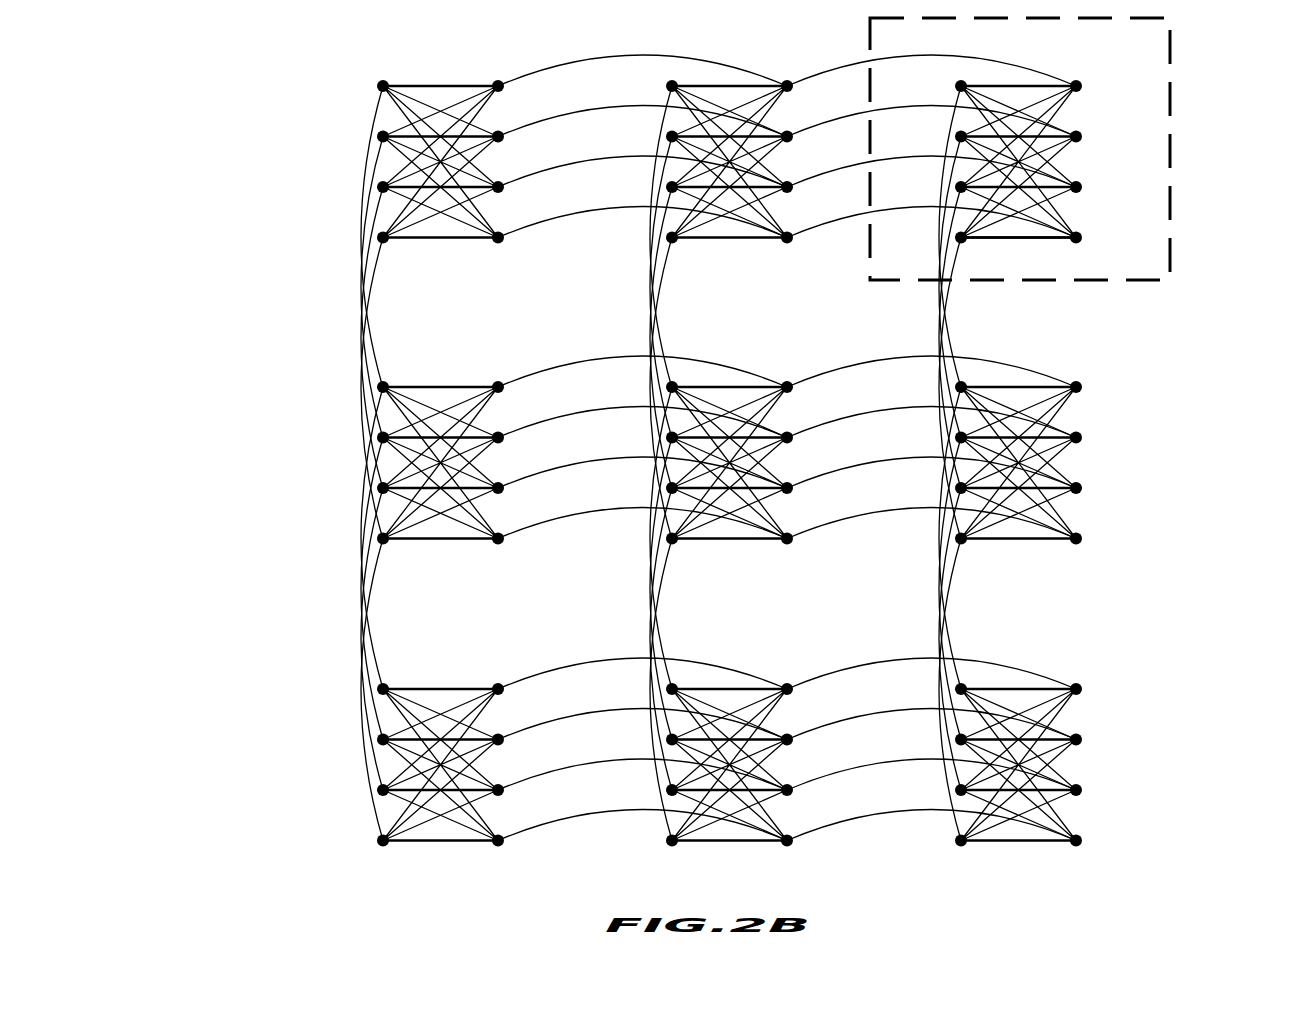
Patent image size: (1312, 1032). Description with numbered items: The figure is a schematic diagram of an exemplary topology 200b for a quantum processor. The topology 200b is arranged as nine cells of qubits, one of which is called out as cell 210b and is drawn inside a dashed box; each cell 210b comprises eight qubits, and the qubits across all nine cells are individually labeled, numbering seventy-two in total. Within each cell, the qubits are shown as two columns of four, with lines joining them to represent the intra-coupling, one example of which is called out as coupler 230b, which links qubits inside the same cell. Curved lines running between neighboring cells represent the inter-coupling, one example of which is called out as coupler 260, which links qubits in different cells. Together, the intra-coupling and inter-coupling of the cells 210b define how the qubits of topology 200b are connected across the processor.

The topology 200b is at (208, 106).
The cell 210b is at (1080, 171).
The coupler 230b is at (1021, 243).
The coupler 260 is at (1046, 366).